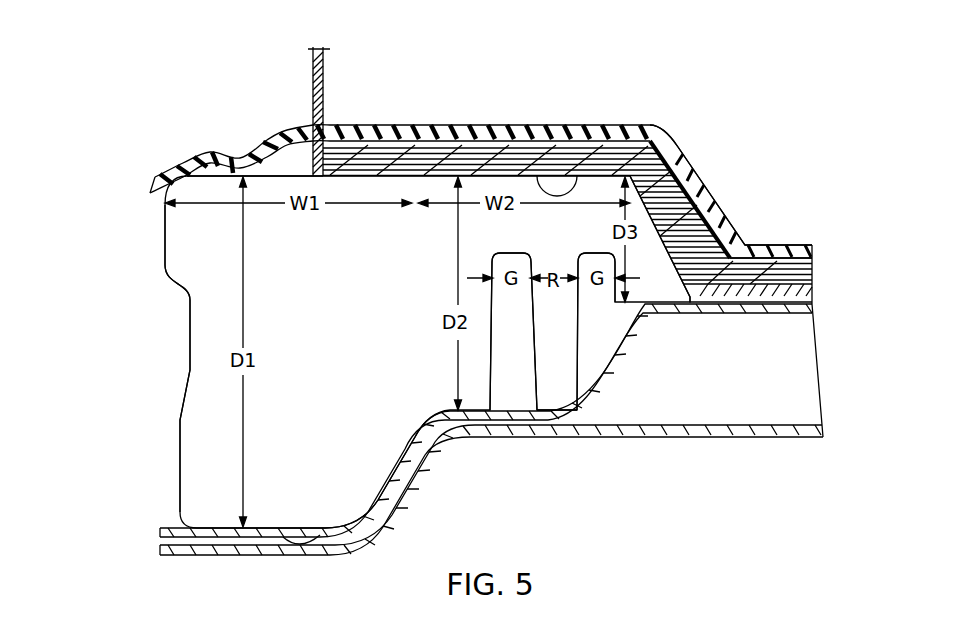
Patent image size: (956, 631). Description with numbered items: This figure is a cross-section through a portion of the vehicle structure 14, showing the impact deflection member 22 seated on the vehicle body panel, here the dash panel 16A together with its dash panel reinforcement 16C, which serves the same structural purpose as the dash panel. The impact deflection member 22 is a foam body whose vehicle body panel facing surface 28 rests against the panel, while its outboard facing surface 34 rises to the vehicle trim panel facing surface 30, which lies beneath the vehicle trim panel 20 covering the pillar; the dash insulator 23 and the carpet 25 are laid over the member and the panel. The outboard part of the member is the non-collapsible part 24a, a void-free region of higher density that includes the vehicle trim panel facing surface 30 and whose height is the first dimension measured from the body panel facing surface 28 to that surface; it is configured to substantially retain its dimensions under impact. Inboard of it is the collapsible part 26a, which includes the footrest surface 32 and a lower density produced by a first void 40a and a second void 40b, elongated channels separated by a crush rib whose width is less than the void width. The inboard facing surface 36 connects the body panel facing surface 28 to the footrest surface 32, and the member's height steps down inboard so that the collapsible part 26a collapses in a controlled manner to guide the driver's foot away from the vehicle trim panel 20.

The vehicle structure 14 is at (660, 74).
The dash panel 16A is at (693, 437).
The dash panel reinforcement 16C is at (737, 313).
The vehicle trim panel 20 is at (325, 72).
The impact deflection member 22 is at (157, 301).
The dash insulator 23 is at (500, 153).
The non-collapsible part 24a is at (217, 460).
The carpet 25 is at (164, 178).
The collapsible part 26a is at (555, 360).
The vehicle body panel facing surface 28 is at (320, 532).
The vehicle trim panel facing surface 30 is at (213, 175).
The footrest surface 32 is at (583, 174).
The outboard facing surface 34 is at (190, 343).
The inboard facing surface 36 is at (688, 217).
The first void 40a is at (492, 358).
The second void 40b is at (587, 313).